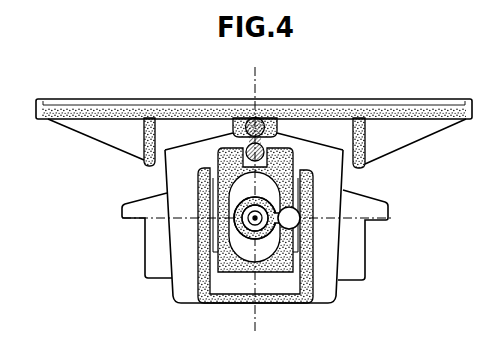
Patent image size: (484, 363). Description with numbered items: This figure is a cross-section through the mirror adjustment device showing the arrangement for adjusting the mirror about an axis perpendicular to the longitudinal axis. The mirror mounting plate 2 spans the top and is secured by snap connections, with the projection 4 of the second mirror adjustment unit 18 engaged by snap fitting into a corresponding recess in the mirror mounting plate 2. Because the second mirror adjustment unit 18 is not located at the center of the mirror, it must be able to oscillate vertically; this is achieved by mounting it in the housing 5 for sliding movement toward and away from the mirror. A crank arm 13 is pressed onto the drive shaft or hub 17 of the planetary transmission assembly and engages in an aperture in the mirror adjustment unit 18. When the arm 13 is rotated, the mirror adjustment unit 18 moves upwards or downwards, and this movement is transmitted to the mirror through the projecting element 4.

The mirror mounting plate 2 is at (112, 107).
The projection 4 is at (267, 115).
The housing 5 is at (323, 283).
The crank arm 13 is at (233, 225).
The drive shaft or hub 17 is at (250, 232).
The second mirror adjustment unit 18 is at (293, 168).